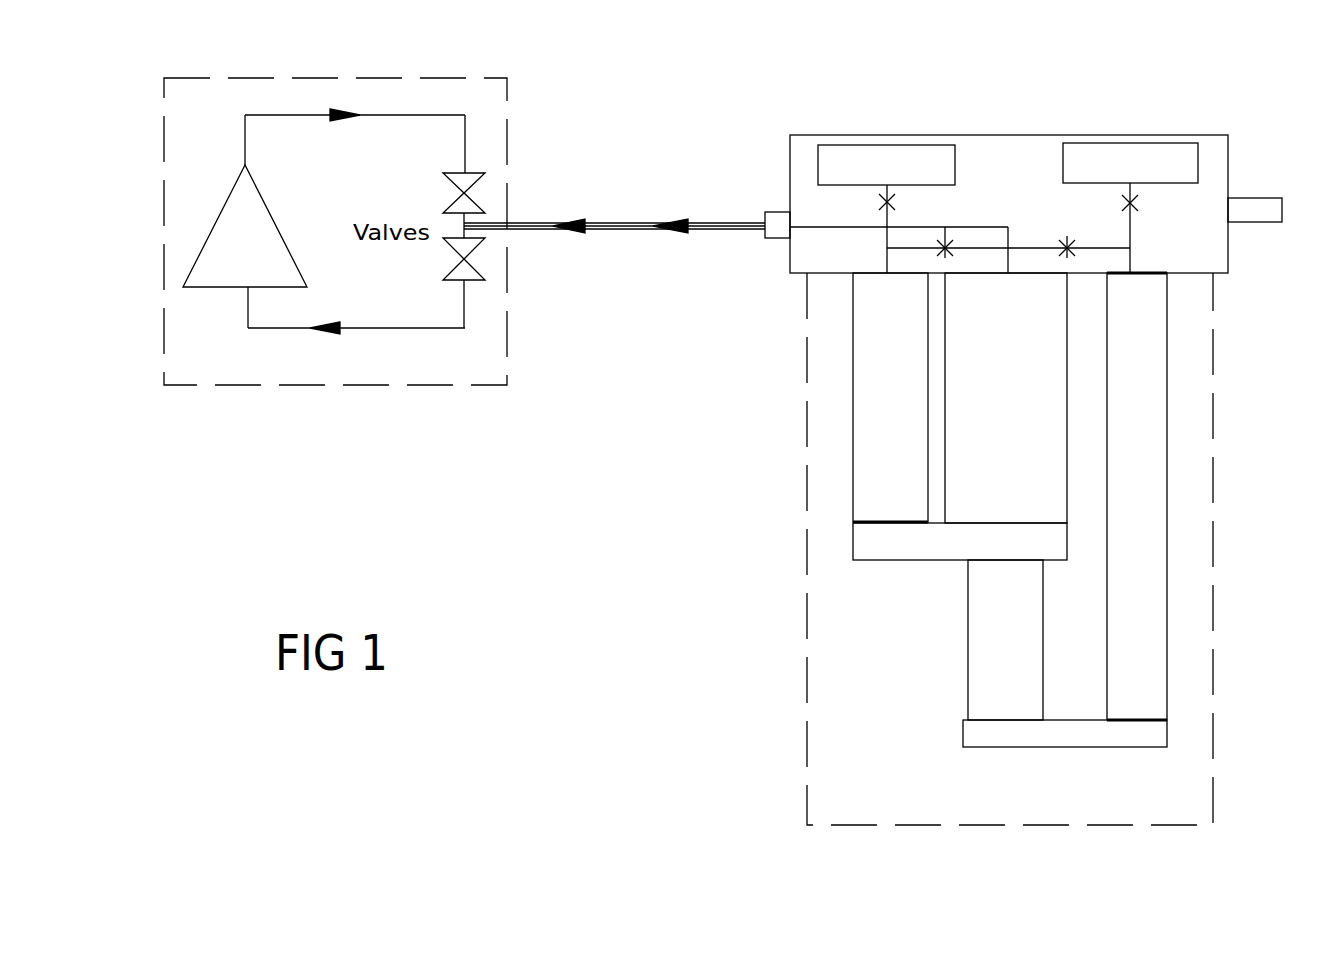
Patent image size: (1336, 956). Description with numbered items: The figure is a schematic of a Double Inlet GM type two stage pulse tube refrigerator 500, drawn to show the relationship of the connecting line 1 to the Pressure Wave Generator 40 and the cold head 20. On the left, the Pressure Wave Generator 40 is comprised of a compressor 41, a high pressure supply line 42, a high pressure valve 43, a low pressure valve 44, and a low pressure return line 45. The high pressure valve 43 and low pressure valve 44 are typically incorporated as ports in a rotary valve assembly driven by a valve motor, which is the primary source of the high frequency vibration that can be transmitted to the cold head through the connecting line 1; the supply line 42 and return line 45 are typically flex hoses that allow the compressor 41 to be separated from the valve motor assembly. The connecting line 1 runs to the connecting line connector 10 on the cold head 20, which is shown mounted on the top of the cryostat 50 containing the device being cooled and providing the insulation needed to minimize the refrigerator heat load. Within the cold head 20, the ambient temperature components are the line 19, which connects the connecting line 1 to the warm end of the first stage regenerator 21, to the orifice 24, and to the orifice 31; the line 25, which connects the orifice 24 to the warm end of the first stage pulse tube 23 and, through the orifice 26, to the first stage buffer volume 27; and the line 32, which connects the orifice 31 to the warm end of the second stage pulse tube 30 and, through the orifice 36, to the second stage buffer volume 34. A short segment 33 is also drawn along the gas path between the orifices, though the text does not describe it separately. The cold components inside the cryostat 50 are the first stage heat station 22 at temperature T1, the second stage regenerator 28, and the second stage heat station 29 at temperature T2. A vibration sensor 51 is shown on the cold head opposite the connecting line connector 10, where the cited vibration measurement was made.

The Double Inlet GM type two stage pulse tube refrigerator 500 is at (780, 38).
The Pressure Wave Generator 40 is at (383, 63).
The compressor 41 is at (258, 187).
The high pressure supply line 42 is at (420, 118).
The high pressure valve 43 is at (447, 191).
The low pressure valve 44 is at (452, 264).
The low pressure return line 45 is at (422, 327).
The connecting line 1 is at (693, 207).
The connecting line connector 10 is at (779, 240).
The cold head 20 is at (920, 113).
The first stage buffer volume 27 is at (886, 165).
The second stage buffer volume 34 is at (1130, 163).
The orifice 26 is at (878, 203).
The line 19 is at (850, 233).
The line 25 is at (884, 258).
The orifice 24 is at (947, 225).
The gas line 33 is at (1030, 247).
The orifice 31 is at (1068, 242).
The orifice 36 is at (1138, 204).
The line 32 is at (1131, 243).
The sensor 51 is at (1230, 208).
The cryostat 50 is at (806, 405).
The first stage pulse tube 23 is at (890, 397).
The first stage regenerator 21 is at (1006, 398).
The first stage heat station 22 is at (960, 541).
The second stage regenerator 28 is at (1005, 640).
The second stage pulse tube 30 is at (1137, 496).
The second stage heat station 29 is at (1065, 733).